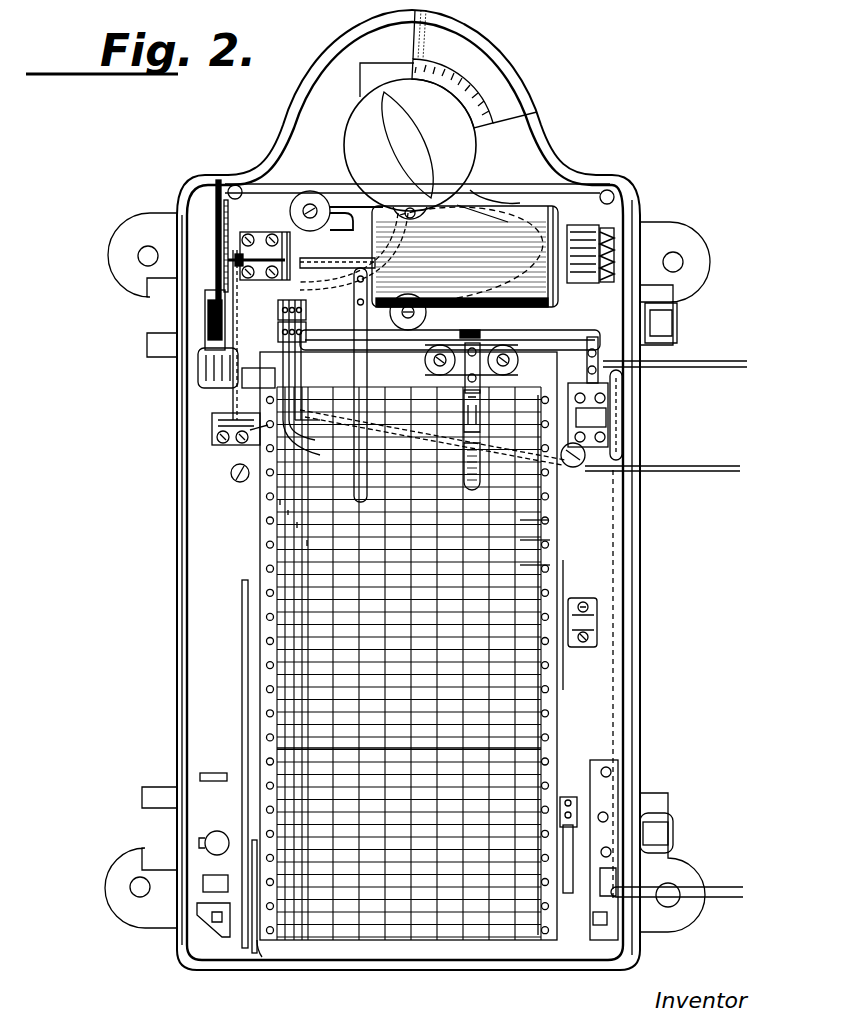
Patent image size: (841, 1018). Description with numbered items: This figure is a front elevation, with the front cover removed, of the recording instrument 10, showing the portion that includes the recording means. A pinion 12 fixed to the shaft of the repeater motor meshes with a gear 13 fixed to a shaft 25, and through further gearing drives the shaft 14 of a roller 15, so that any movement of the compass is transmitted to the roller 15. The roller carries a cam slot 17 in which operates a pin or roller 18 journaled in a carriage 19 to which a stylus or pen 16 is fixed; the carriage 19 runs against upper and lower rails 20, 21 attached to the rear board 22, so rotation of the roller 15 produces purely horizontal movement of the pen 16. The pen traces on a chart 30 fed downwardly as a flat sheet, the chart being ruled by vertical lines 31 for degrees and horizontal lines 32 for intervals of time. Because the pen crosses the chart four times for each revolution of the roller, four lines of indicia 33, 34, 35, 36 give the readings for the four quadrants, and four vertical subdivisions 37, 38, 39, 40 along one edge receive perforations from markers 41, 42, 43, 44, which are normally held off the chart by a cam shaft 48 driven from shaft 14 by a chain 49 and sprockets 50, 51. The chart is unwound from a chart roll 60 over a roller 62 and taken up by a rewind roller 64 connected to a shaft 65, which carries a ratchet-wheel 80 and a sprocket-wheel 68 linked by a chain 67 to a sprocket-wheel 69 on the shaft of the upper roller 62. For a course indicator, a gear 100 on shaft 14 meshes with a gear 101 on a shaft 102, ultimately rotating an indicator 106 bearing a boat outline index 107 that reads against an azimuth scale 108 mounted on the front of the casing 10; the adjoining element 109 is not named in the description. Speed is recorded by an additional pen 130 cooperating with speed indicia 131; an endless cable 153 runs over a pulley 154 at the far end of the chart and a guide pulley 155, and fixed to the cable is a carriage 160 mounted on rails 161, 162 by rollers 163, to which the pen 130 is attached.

The recording instrument 10 is at (180, 578).
The pinion 12 is at (225, 325).
The gear 13 is at (216, 215).
The shaft 14 is at (266, 232).
The roller 15 is at (429, 256).
The stylus or pen 16 is at (369, 405).
The cam slot 17 is at (386, 250).
The pin or roller 18 is at (390, 262).
The carriage 19 is at (327, 257).
The upper rail 20 is at (528, 187).
The lower rail 21 is at (577, 332).
The rear board 22 is at (597, 207).
The shaft 25 is at (228, 260).
The chart 30 is at (408, 646).
The vertical lines 31 is at (436, 655).
The horizontal lines 32 is at (427, 691).
The line of indicia 33 is at (540, 497).
The line of indicia 34 is at (550, 520).
The line of indicia 35 is at (552, 540).
The line of indicia 36 is at (552, 565).
The vertical subdivision 37 is at (280, 502).
The vertical subdivision 38 is at (288, 512).
The vertical subdivision 39 is at (297, 525).
The vertical subdivision 40 is at (307, 543).
The marker 41 is at (258, 435).
The marker 42 is at (295, 425).
The marker 43 is at (293, 420).
The marker 44 is at (301, 410).
The cam shaft 48 is at (274, 360).
The chain 49 is at (238, 300).
The sprocket 50 is at (230, 418).
The sprocket 51 is at (249, 233).
The chart roll 60 is at (570, 652).
The roller 62 is at (222, 471).
The rewind roller 64 is at (268, 945).
The shaft 65 is at (726, 886).
The chain 67 is at (624, 558).
The sprocket-wheel 68 is at (616, 900).
The sprocket-wheel 69 is at (623, 412).
The ratchet-wheel 80 is at (572, 870).
The gear 100 is at (605, 284).
The gear 101 is at (614, 238).
The shaft 102 is at (480, 182).
The indicator 106 is at (410, 145).
The boat outline 107 is at (437, 153).
The azimuth scale 108 is at (451, 94).
The sector 109 is at (475, 66).
The additional stylus or pen 130 is at (481, 420).
The speed indicia 131 is at (550, 748).
The endless cable 153 is at (732, 370).
The pulley 154 is at (210, 363).
The guide pulley 155 is at (580, 468).
The carriage 160 is at (494, 346).
The rail 161 is at (438, 346).
The rail 162 is at (412, 378).
The rollers 163 is at (438, 352).